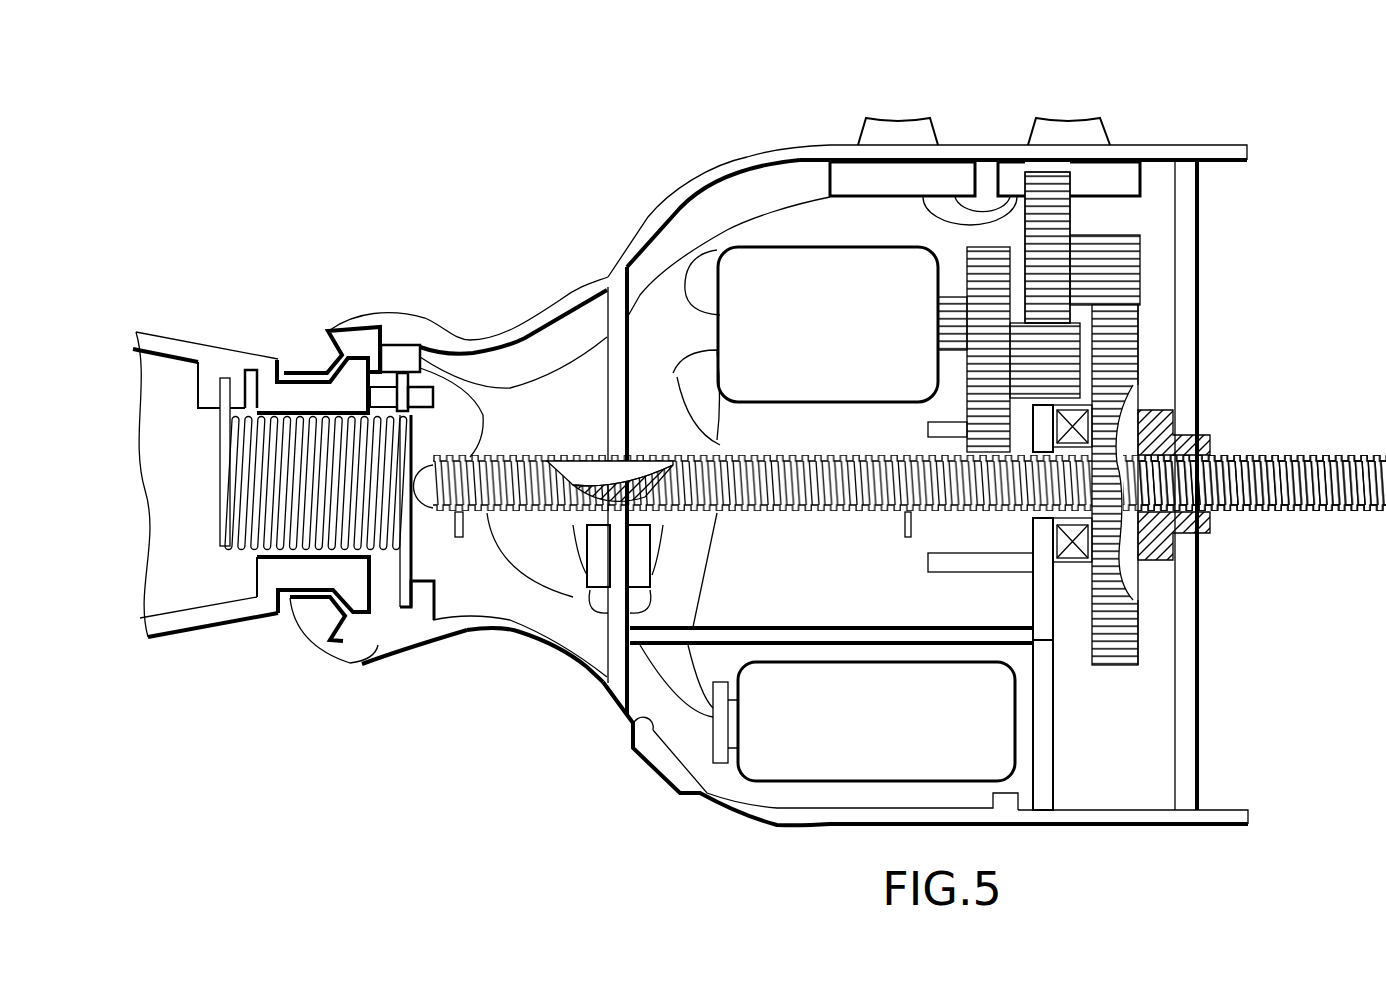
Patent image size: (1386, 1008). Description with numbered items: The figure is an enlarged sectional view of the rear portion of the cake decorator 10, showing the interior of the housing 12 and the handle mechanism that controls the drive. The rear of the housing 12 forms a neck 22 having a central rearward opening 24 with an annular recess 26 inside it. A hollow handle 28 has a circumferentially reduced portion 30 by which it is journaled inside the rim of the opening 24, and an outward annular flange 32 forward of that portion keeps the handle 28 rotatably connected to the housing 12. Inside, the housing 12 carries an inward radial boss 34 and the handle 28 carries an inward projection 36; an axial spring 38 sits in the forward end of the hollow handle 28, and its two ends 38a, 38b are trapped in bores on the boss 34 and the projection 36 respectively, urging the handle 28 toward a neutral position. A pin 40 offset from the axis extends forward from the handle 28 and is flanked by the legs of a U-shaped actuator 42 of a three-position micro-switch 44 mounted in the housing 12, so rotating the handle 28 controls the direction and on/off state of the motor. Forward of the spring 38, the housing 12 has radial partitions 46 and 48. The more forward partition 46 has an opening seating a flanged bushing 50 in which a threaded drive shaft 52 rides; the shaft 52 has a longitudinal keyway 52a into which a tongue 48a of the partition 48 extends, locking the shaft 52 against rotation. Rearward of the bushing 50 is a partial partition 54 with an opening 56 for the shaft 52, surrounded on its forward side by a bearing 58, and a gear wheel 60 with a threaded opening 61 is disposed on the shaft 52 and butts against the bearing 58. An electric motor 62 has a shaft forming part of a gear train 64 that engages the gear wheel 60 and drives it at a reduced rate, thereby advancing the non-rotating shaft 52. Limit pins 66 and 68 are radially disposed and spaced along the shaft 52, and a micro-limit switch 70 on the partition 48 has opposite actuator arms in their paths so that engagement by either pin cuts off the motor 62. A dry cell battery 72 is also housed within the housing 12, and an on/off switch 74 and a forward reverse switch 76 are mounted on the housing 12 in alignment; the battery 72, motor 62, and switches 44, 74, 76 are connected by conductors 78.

The cake decorator 10 is at (749, 469).
The housing 12 is at (676, 178).
The neck 22 is at (480, 338).
The central rearward opening 24 is at (300, 360).
The annular recess 26 is at (360, 657).
The hollow handle 28 is at (165, 333).
The circumferentially reduced portion 30 is at (283, 580).
The outward annular flange 32 is at (360, 603).
The inward radial boss 34 is at (433, 597).
The inward projection 36 is at (197, 372).
The axial spring 38 is at (237, 498).
The spring end 38a is at (225, 407).
The spring end 38b is at (400, 645).
The pin 40 is at (433, 400).
The U-shaped actuator 42 is at (408, 412).
The three-position micro-switch 44 is at (403, 350).
The radial partition 46 is at (1198, 220).
The radial partition 48 is at (617, 313).
The tongue 48a is at (617, 460).
The flanged bushing 50 is at (1205, 532).
The threaded drive shaft 52 is at (1272, 457).
The longitudinal keyway 52a is at (647, 467).
The partial partition 54 is at (1048, 735).
The opening 56 is at (1033, 520).
The bearing 58 is at (1060, 565).
The gear wheel 60 is at (1138, 325).
The threaded opening 61 is at (1137, 415).
The electric motor 62 is at (782, 400).
The gear train 64 is at (1093, 235).
The limit pin 66 is at (461, 528).
The limit pin 68 is at (905, 530).
The micro-limit switch 70 is at (645, 573).
The dry cell battery 72 is at (852, 785).
The on/off switch 74 is at (900, 123).
The forward reverse switch 76 is at (1072, 120).
The conductors 78 is at (763, 195).